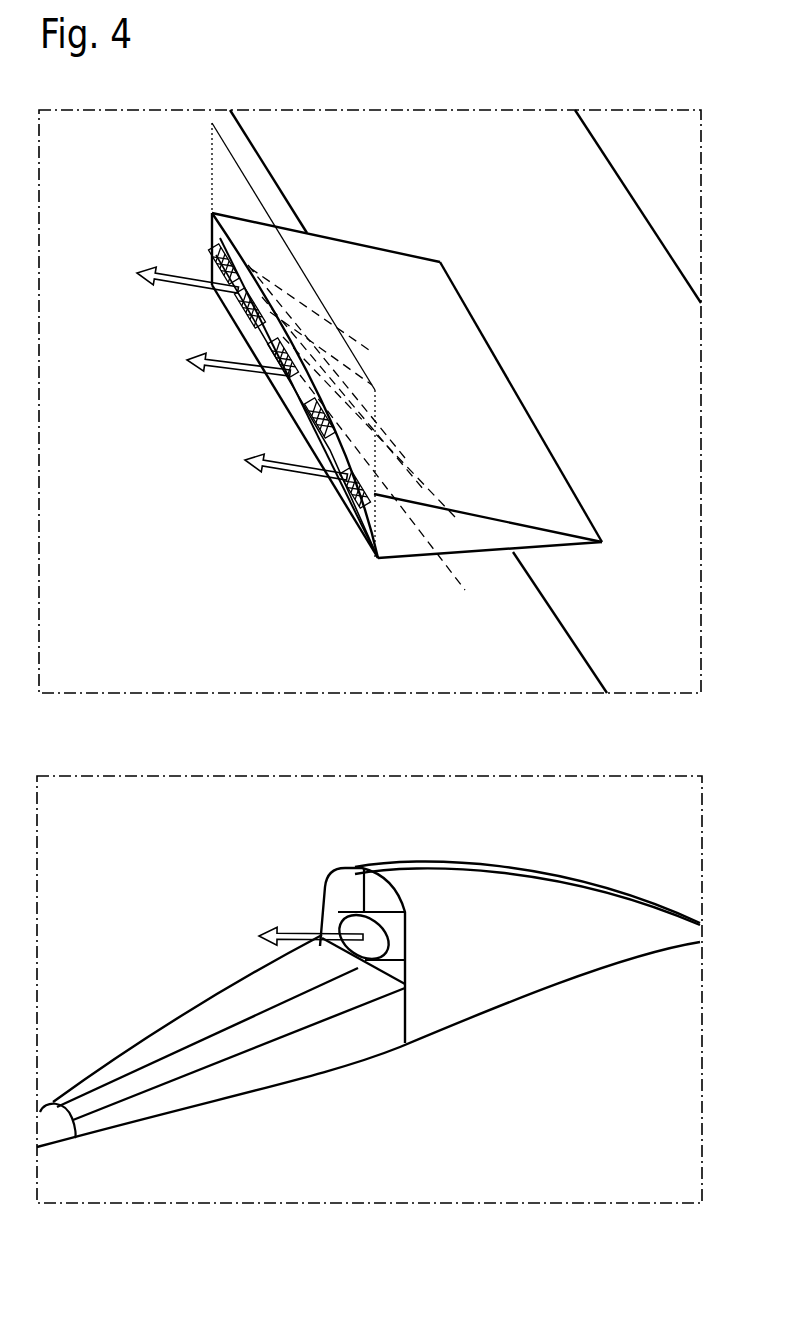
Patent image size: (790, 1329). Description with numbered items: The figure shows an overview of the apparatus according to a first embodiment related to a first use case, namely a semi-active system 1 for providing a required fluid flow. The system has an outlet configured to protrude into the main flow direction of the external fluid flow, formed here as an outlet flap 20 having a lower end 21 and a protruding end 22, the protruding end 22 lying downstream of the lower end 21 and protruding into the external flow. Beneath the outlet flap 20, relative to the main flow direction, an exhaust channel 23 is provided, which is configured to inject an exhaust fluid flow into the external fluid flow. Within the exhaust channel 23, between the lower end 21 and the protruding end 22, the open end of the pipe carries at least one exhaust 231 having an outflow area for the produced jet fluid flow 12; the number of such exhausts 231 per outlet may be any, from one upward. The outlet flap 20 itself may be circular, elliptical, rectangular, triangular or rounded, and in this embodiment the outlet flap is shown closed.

The semi-active system 1 is at (362, 89).
The jet fluid flow 12 is at (222, 282).
The outlet flap 20 is at (467, 383).
The lower end 21 is at (573, 480).
The protruding end 22 is at (468, 513).
The exhaust channel 23 is at (303, 268).
The exhaust 231 is at (347, 504).